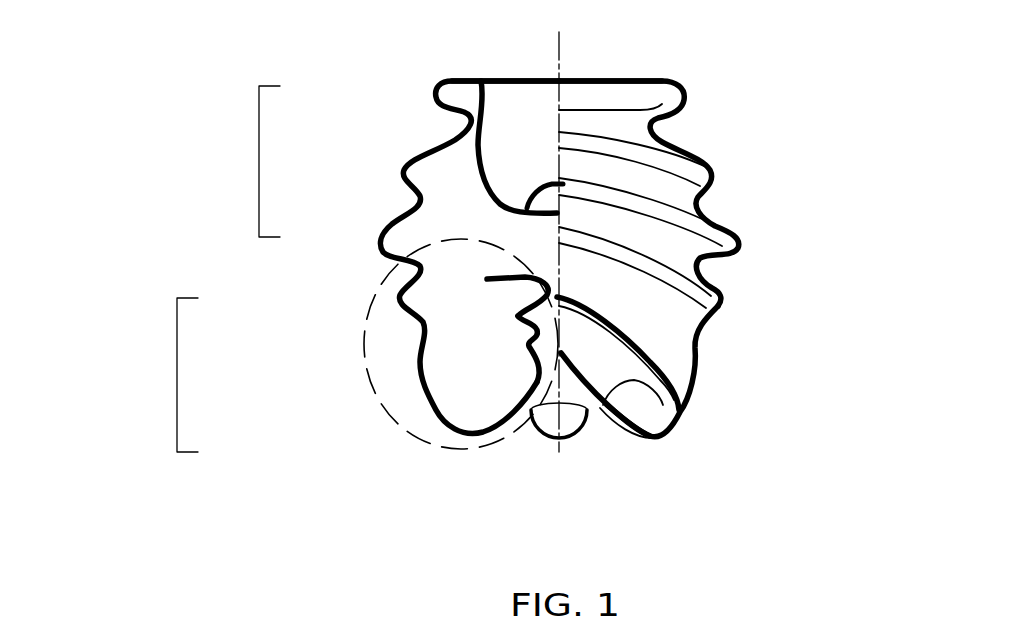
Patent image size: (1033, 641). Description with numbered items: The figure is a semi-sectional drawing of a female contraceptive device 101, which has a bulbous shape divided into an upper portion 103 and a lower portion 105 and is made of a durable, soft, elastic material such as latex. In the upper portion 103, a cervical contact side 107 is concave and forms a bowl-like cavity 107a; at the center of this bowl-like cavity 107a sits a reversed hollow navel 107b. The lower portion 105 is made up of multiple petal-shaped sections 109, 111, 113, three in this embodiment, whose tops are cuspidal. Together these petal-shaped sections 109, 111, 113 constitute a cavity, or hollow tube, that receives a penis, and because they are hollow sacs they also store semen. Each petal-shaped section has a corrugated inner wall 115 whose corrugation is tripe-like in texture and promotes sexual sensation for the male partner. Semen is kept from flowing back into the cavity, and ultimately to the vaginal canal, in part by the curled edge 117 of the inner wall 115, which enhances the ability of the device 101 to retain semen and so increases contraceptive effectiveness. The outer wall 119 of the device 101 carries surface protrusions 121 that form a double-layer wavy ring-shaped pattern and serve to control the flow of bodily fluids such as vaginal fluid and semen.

The female contraceptive device 101 is at (708, 83).
The upper portion 103 is at (252, 158).
The lower portion 105 is at (167, 372).
The cervical contact side 107 is at (608, 78).
The bowl-like cavity 107a is at (533, 130).
The reversed hollow navel 107b is at (520, 188).
The petal-shaped section 109 is at (368, 380).
The petal-shaped section 111 is at (575, 433).
The petal-shaped section 113 is at (637, 403).
The corrugated inner wall 115 is at (527, 337).
The curled edge 117 is at (483, 283).
The outer wall 119 is at (707, 357).
The surface protrusions 121 is at (717, 182).